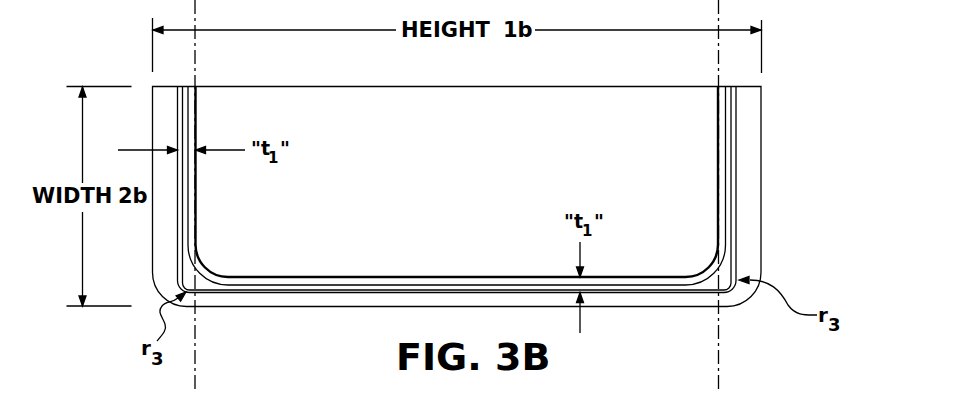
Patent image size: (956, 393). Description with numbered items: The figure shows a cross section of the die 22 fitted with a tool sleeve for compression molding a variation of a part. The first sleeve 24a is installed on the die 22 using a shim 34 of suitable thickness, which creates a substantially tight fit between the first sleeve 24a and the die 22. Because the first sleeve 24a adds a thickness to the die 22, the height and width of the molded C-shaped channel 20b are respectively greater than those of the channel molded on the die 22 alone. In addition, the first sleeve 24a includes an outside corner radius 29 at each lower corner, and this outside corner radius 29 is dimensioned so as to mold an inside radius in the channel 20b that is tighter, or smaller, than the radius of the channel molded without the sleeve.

The C-shaped channel 20b is at (745, 113).
The first sleeve 24a is at (731, 162).
The shim 34 is at (723, 193).
The die 22 is at (470, 199).
The outside corner radius 29 is at (182, 273).